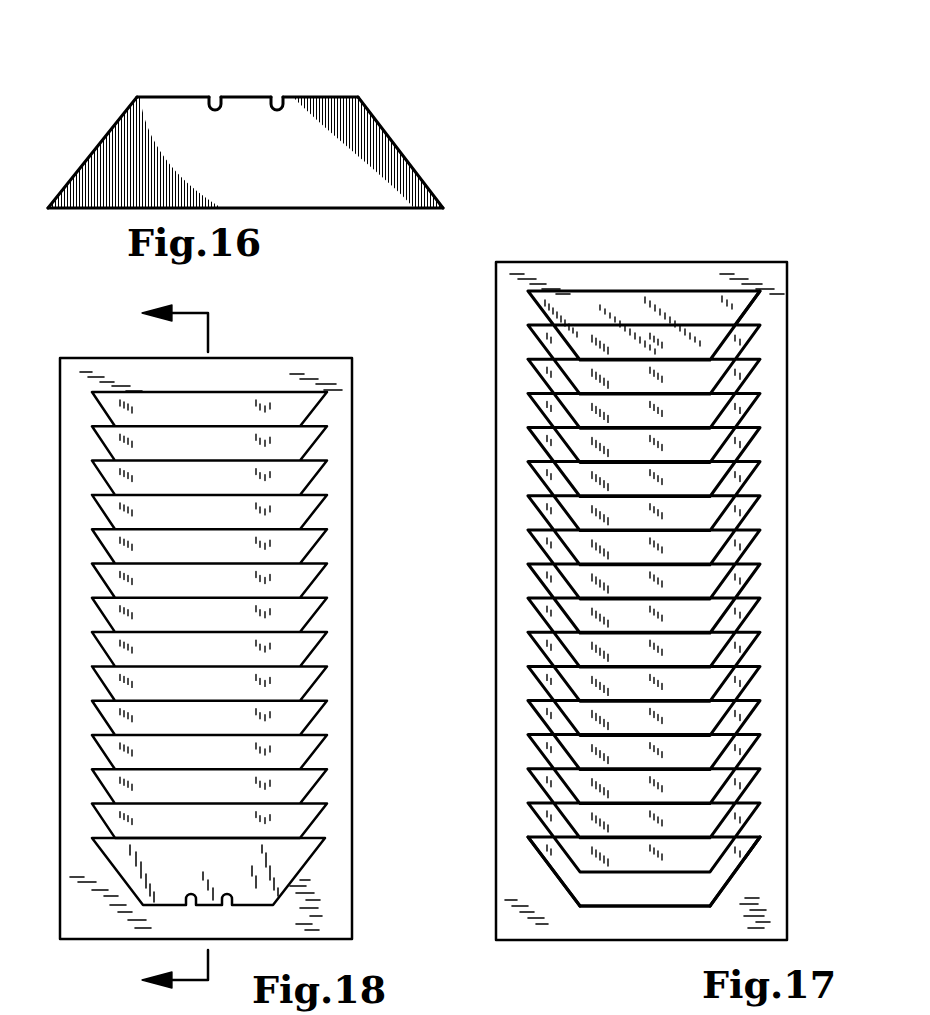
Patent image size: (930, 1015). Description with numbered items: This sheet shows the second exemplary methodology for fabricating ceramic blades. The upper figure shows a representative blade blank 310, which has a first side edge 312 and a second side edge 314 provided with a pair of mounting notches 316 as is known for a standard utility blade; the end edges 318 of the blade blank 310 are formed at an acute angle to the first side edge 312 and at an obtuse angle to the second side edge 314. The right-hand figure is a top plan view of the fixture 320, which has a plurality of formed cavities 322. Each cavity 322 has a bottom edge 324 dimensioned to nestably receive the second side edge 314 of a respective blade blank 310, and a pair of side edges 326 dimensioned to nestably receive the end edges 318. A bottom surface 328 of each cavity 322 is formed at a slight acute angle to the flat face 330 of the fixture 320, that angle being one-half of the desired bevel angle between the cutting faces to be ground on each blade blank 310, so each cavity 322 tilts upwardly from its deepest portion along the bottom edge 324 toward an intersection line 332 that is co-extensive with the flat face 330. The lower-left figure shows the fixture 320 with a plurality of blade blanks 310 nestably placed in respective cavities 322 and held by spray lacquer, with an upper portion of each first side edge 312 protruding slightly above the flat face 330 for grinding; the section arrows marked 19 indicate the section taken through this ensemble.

In FIG. 16, the blade blank 310 is at (253, 138).
In FIG. 18, the blade blank 310 is at (228, 420).
In FIG. 16, the first side edge 312 is at (317, 211).
In FIG. 16, the second side edge 314 is at (173, 94).
In FIG. 16, the mounting notches 316 is at (278, 96).
In FIG. 16, the end edges 318 is at (108, 130).
In FIG. 17, the fixture 320 is at (478, 546).
In FIG. 18, the fixture 320 is at (336, 655).
In FIG. 17, the formed cavities 322 is at (621, 290).
In FIG. 17, the bottom edge 324 is at (637, 907).
In FIG. 17, the side edges 326 is at (538, 857).
In FIG. 17, the bottom surface 328 is at (548, 304).
In FIG. 17, the flat face 330 is at (757, 311).
In FIG. 17, the intersection line 332 is at (752, 835).
In FIG. 18, the section line 19- 19 is at (154, 648).